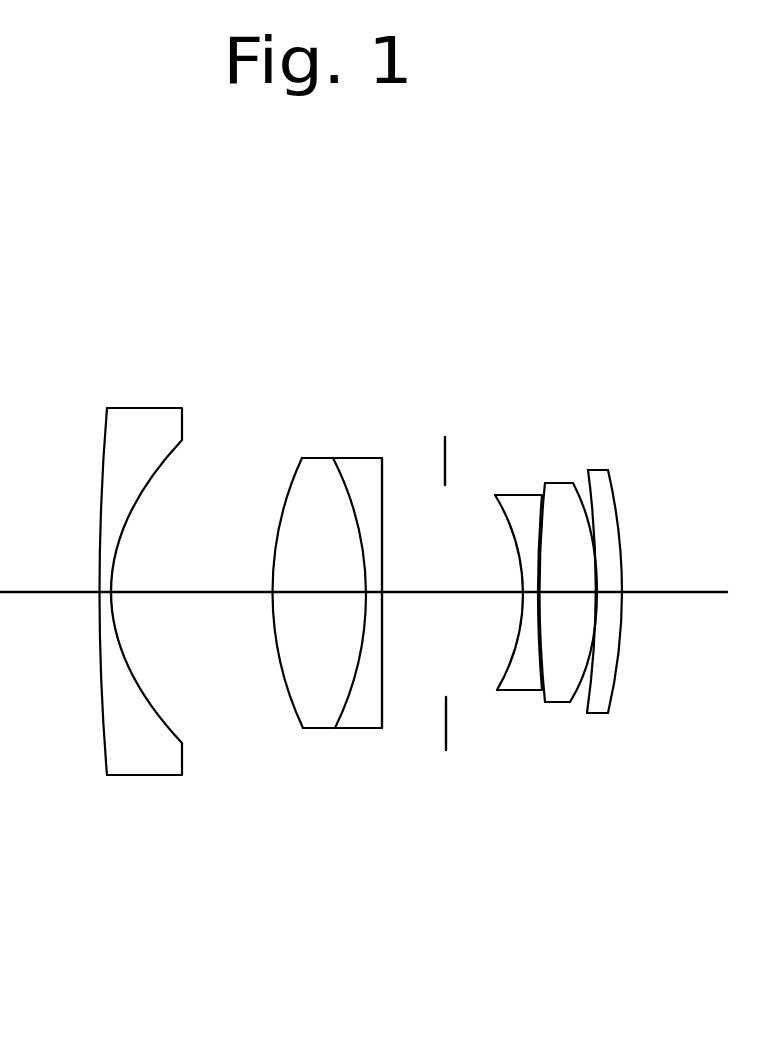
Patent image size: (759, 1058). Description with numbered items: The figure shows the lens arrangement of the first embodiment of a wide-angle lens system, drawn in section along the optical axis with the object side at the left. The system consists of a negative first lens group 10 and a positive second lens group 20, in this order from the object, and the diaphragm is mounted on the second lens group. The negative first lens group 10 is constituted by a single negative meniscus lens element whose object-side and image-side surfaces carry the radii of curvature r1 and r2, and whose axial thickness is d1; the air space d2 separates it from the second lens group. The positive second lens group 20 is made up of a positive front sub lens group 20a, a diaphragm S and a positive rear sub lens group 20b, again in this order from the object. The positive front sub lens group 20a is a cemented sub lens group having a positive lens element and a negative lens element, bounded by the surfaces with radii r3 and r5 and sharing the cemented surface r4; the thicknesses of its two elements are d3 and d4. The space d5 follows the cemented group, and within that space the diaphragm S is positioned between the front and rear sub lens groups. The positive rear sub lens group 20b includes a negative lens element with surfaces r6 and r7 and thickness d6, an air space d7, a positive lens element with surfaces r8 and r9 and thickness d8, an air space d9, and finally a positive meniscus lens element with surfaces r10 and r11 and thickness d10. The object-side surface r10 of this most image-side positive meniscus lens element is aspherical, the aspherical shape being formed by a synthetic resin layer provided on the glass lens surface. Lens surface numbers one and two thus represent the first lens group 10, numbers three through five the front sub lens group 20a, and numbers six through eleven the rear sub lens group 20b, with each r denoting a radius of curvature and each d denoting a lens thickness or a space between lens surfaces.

The negative first lens group 10 is at (178, 272).
The positive second lens group 20 is at (645, 250).
The positive 2a sub lens group 20a is at (397, 342).
The positive 2b sub lens group 20b is at (753, 340).
The diaphragm S is at (444, 450).
The radius of curvature of lens surface No. 1 r1 is at (107, 408).
The radius of curvature of lens surface No. 2 r2 is at (182, 408).
The radius of curvature of lens surface No. 3 r3 is at (302, 458).
The radius of curvature of lens surface No. 4 r4 is at (333, 458).
The radius of curvature of lens surface No. 5 r5 is at (382, 458).
The radius of curvature of lens surface No. 6 r6 is at (495, 495).
The radius of curvature of lens surface No. 7 r7 is at (542, 495).
The radius of curvature of lens surface No. 8 r8 is at (573, 483).
The radius of curvature of lens surface No. 9 r9 is at (588, 470).
The radius of curvature of lens surface No. 10 r10 is at (590, 470).
The radius of curvature of lens surface No. 11 r11 is at (608, 470).
The lens thickness d1 is at (104, 592).
The space between lens surfaces d2 is at (210, 592).
The lens thickness d3 is at (327, 592).
The lens thickness d4 is at (373, 592).
The space between lens surfaces d5 is at (418, 592).
The lens thickness d6 is at (528, 592).
The space between lens surfaces d7 is at (558, 592).
The lens thickness d8 is at (598, 592).
The space between lens surfaces d9 is at (612, 592).
The lens thickness d10 is at (623, 592).